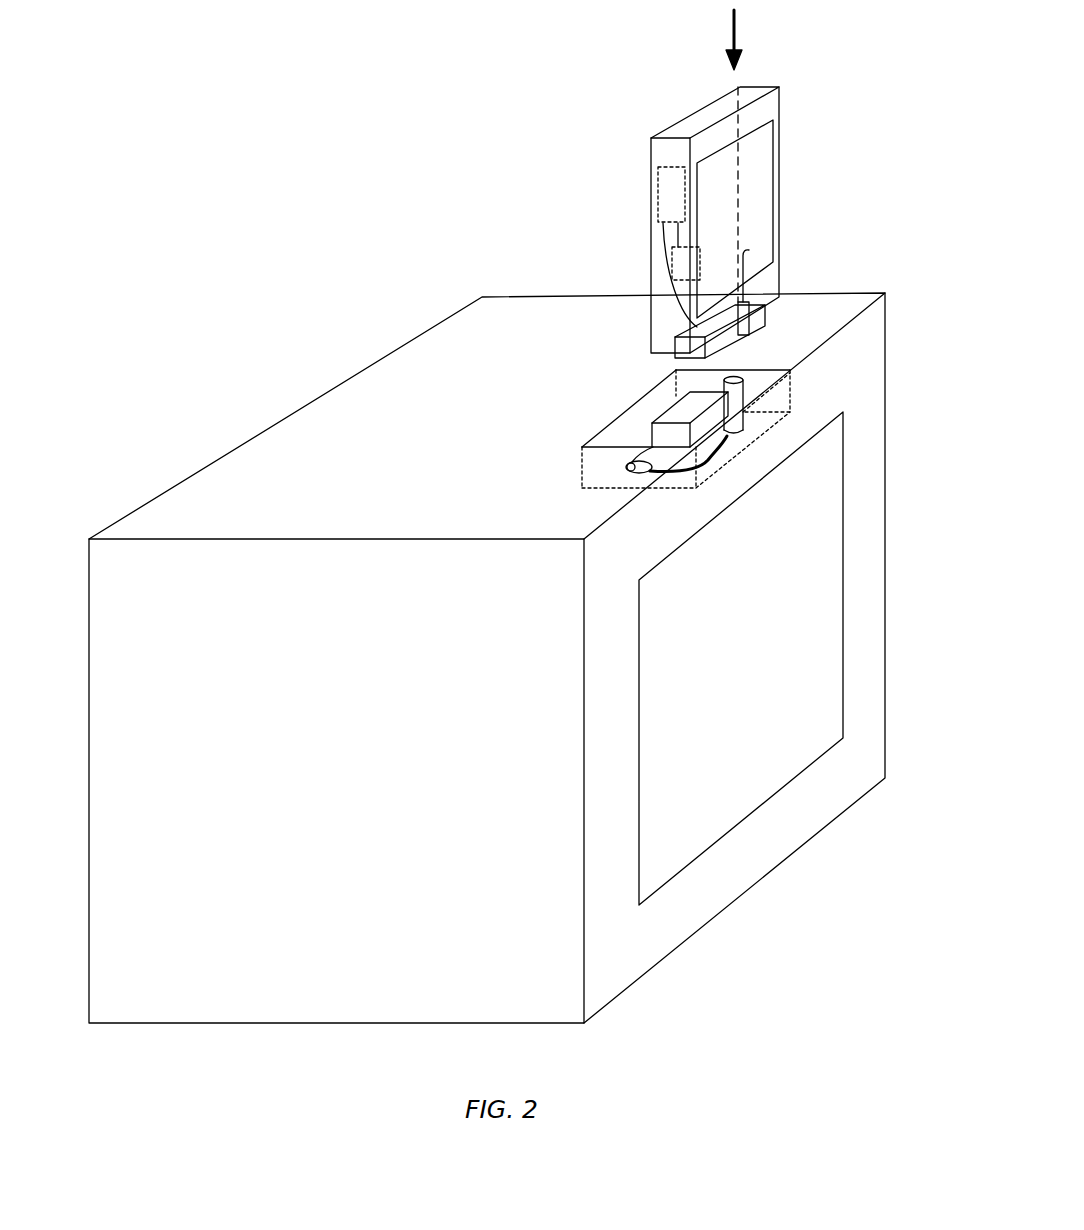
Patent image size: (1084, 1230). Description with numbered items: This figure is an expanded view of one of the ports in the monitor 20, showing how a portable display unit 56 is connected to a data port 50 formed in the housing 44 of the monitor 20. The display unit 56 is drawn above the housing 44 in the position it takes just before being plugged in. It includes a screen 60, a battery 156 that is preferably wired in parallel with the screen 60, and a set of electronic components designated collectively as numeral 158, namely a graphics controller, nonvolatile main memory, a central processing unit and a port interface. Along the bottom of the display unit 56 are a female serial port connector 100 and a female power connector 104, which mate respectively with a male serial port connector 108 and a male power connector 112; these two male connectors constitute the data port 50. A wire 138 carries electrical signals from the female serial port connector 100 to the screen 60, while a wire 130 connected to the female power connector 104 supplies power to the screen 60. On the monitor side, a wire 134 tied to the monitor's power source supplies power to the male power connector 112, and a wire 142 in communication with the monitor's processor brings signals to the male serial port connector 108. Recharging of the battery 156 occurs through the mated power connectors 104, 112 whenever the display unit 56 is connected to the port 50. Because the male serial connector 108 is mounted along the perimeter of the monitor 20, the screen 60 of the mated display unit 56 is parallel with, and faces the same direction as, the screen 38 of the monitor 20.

The monitor 20 is at (903, 310).
The housing 44 is at (445, 318).
The screen 38 is at (718, 695).
The port 50 is at (543, 477).
The display unit 56 is at (677, 101).
The screen 60 is at (773, 170).
The electronic components 158 is at (658, 192).
The wire 138 is at (666, 237).
The battery 156 is at (680, 261).
The wire 130 is at (700, 293).
The female power connector 104 is at (750, 323).
The female serial port connector 100 is at (673, 358).
The male serial port connector 108 is at (652, 423).
The male power connector 112 is at (743, 423).
The wire 142 is at (630, 472).
The wire 134 is at (718, 452).